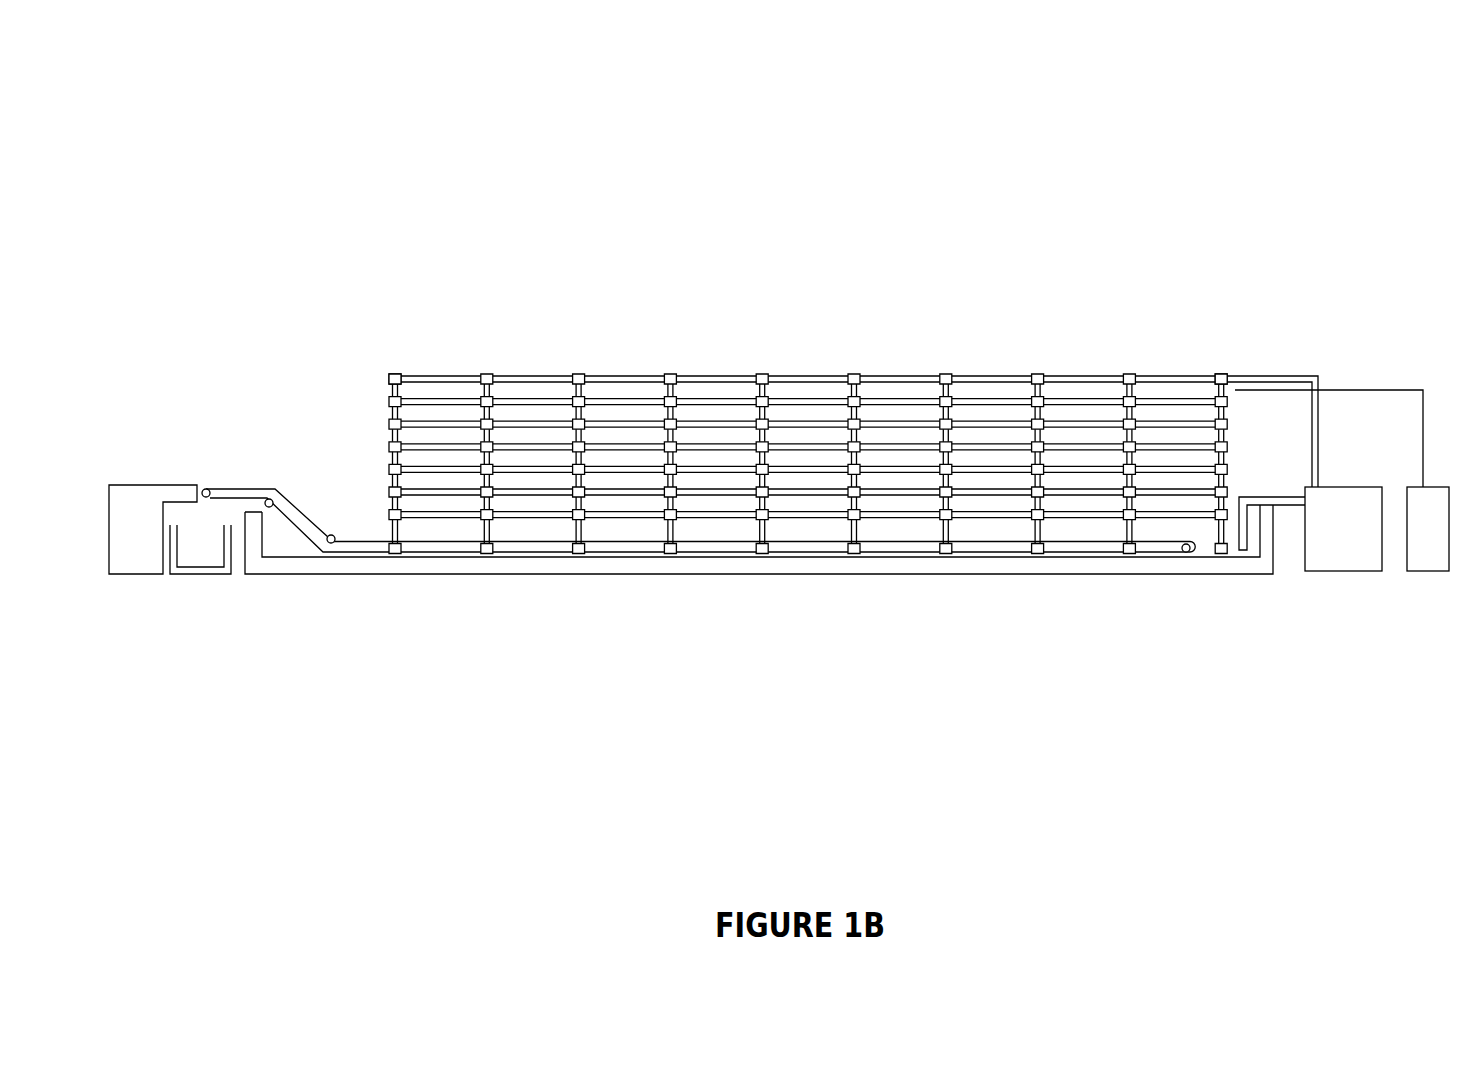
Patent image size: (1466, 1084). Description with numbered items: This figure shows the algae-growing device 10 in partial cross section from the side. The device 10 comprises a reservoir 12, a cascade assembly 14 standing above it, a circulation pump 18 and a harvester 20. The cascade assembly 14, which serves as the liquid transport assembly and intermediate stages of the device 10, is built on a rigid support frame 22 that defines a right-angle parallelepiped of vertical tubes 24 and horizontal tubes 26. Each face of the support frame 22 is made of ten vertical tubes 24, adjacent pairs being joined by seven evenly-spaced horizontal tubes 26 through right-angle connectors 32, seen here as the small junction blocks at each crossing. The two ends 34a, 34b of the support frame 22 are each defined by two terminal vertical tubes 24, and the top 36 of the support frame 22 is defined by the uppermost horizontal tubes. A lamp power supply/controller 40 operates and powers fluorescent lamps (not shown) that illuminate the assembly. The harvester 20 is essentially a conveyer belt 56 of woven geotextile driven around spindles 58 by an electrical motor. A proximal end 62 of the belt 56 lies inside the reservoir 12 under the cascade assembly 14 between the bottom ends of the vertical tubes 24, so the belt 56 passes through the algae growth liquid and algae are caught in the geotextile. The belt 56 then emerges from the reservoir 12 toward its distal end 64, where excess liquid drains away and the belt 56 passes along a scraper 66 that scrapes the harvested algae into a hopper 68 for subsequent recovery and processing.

The device 10 is at (303, 166).
The reservoir 12 is at (610, 575).
The cascade assembly 14 is at (643, 254).
The circulation pump 18 is at (1345, 557).
The harvester 20 is at (196, 289).
The support frame 22 is at (1107, 315).
The vertical tubes 24 is at (388, 412).
The horizontal tubes 26 is at (1102, 420).
The right-angle connectors 32 is at (670, 370).
The end of support frame 34a is at (388, 384).
The end of support frame 34b is at (1229, 372).
The top of support frame 36 is at (787, 318).
The lamp power supply/controller 40 is at (1433, 483).
The conveyer belt 56 is at (292, 525).
The spindles 58 is at (203, 485).
The proximal end 62 is at (1188, 556).
The distal end 64 is at (182, 427).
The scraper 66 is at (143, 485).
The hopper 68 is at (195, 575).